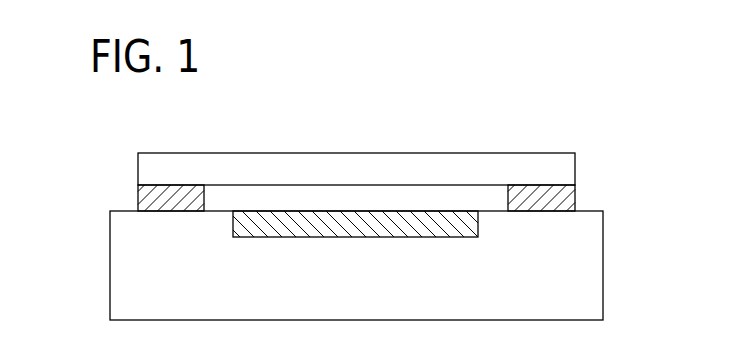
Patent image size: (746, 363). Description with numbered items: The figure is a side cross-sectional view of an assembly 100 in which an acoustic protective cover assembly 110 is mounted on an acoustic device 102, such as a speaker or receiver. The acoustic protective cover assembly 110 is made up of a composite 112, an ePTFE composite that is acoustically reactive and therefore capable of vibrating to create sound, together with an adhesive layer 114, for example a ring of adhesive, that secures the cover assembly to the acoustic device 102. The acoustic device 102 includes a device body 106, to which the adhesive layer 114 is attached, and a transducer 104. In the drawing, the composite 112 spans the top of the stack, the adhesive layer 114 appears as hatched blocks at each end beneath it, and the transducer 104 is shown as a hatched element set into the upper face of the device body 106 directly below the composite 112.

The assembly 100 is at (486, 95).
The acoustic device 102 is at (637, 243).
The transducer 104 is at (395, 238).
The device body 106 is at (507, 306).
The acoustic protective cover assembly 110 is at (104, 151).
The composite 112 is at (261, 157).
The adhesive layer 114 is at (146, 195).